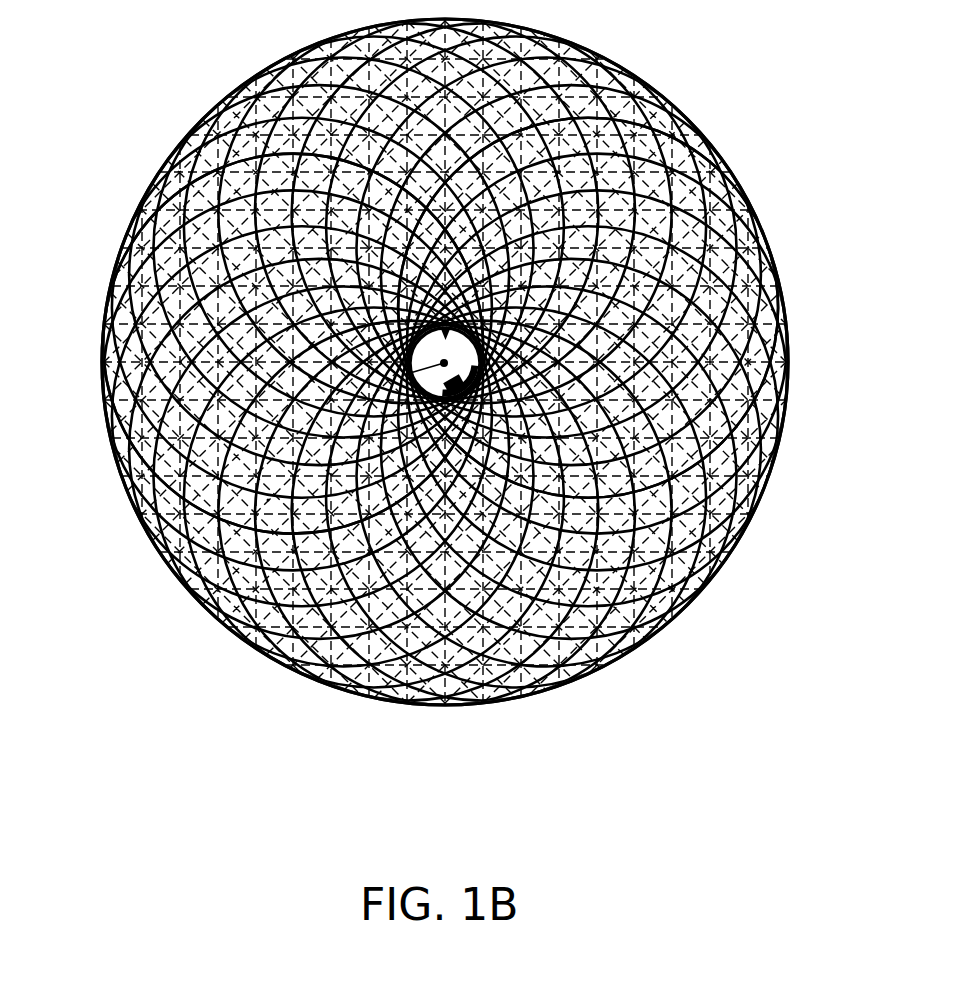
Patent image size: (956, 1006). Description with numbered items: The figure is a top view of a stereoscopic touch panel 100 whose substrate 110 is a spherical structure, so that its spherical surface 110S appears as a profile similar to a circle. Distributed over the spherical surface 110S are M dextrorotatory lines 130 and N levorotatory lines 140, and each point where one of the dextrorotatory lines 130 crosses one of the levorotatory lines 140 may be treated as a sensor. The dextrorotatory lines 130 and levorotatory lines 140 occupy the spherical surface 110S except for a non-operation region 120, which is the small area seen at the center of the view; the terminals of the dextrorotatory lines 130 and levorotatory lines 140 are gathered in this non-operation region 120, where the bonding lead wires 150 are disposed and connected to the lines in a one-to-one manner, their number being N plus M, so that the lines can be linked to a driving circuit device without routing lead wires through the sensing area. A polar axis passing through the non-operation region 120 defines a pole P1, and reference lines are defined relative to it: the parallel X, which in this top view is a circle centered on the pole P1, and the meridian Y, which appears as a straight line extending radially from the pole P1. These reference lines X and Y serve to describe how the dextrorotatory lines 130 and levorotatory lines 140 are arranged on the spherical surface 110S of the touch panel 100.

The stereoscopic touch panel 100 is at (764, 750).
The substrate 110 is at (728, 168).
The spherical surface 110S is at (672, 128).
The non-operation region 120 is at (385, 122).
The dextrorotatory lines 130 is at (750, 197).
The levorotatory lines 140 is at (108, 290).
The bonding lead wires 150 is at (452, 392).
The pole P1 is at (268, 500).
The parallel X is at (790, 337).
The meridian Y is at (783, 278).